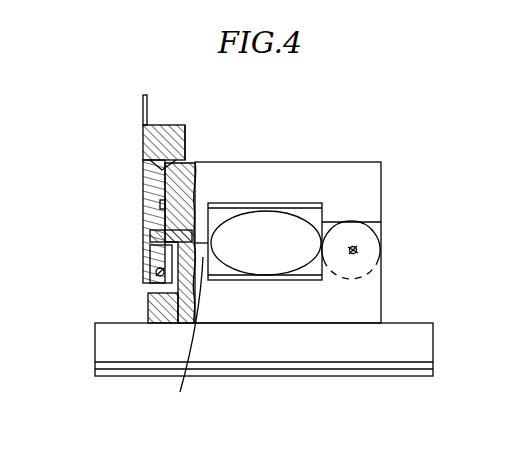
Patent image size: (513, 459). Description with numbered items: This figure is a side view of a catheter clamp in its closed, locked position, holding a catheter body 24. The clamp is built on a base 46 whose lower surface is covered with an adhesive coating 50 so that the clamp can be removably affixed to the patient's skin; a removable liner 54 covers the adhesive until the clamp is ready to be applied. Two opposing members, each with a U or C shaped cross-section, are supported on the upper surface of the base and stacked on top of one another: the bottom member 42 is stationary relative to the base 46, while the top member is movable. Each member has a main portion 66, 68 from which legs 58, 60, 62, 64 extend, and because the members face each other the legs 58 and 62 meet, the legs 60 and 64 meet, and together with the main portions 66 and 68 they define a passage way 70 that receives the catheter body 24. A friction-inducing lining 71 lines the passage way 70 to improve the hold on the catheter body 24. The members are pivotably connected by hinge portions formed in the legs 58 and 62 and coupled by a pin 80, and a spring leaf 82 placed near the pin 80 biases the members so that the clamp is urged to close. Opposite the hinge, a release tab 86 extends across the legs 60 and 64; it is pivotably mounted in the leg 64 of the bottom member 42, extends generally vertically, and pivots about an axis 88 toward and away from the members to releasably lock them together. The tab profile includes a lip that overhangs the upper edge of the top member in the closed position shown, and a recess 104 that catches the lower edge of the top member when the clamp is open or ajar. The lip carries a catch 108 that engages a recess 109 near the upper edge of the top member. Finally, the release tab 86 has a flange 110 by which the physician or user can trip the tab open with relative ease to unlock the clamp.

The catheter body 24 is at (298, 238).
The bottom member 42 is at (233, 312).
The base 46 is at (118, 335).
The adhesive coating 50 is at (113, 365).
The removable liner 54 is at (157, 377).
The leg 58 is at (367, 212).
The leg 60 is at (150, 232).
The leg 62 is at (360, 290).
The leg 64 is at (175, 290).
The main portion 66 is at (283, 183).
The main portion 68 is at (268, 300).
The passage way 70 is at (330, 213).
The friction-inducing lining 71 is at (242, 210).
The pin 80 is at (353, 250).
The spring leaf 82 is at (358, 258).
The release tab 86 is at (145, 185).
The axis 88 is at (148, 275).
The recess 104 is at (150, 205).
The catch 108 is at (160, 168).
The recess 109 is at (188, 152).
The flange 110 is at (142, 110).